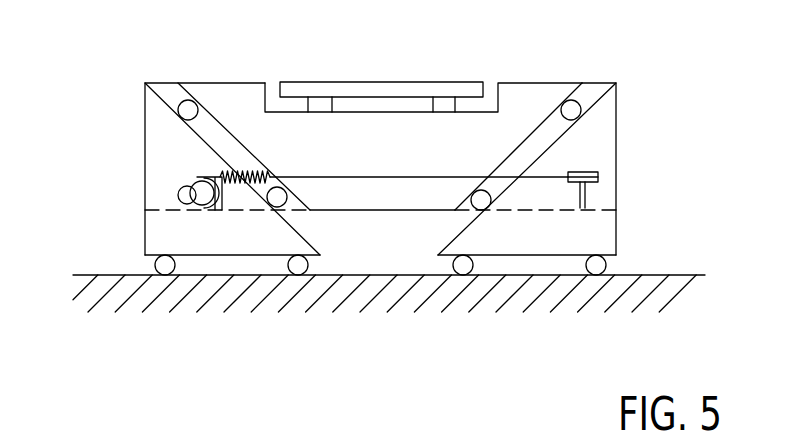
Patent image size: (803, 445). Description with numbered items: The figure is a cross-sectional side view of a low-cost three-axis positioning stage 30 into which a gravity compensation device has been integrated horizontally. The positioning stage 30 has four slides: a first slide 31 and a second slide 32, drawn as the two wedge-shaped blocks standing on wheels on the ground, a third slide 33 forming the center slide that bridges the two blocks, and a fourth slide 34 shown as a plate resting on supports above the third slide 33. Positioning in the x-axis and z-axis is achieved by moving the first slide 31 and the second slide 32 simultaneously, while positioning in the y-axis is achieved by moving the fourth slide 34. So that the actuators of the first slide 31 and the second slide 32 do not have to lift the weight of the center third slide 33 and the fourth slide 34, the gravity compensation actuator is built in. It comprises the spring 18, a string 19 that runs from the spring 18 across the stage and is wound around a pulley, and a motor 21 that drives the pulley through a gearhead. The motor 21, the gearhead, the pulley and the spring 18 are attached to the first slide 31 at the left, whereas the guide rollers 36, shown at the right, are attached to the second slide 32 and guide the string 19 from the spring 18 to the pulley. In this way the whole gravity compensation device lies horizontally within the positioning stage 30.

The spring 18 is at (245, 170).
The string 19 is at (392, 178).
The motor 21 is at (187, 195).
The positioning stage 30 is at (100, 342).
The first slide 31 is at (160, 140).
The second slide 32 is at (600, 143).
The third slide 33 is at (440, 140).
The fourth slide 34 is at (382, 82).
The guide rollers 36 is at (587, 193).